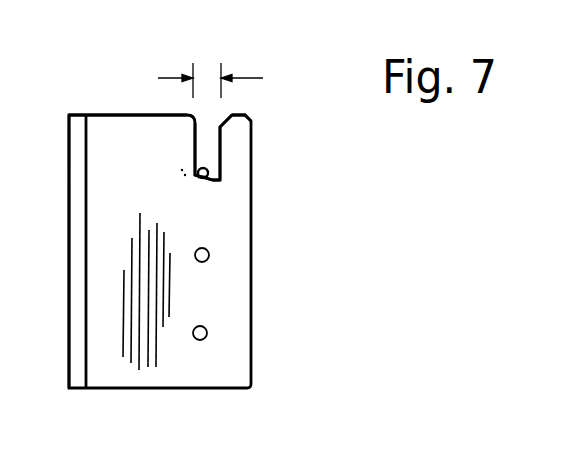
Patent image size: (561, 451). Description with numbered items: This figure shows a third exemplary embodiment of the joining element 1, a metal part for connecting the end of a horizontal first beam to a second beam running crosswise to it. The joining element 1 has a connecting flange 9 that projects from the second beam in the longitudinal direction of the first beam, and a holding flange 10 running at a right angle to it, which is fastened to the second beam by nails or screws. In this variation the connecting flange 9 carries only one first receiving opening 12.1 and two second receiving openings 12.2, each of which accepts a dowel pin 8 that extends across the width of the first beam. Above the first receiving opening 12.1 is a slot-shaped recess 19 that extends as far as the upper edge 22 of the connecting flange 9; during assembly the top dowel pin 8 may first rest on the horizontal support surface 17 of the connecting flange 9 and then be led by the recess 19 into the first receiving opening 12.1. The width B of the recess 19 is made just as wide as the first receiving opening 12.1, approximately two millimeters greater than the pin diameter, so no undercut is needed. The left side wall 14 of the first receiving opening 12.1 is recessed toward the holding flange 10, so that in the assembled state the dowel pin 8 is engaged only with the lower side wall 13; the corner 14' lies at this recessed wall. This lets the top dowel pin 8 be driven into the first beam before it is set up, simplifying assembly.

The joining element 1 is at (139, 107).
The dowel pin 8 is at (202, 184).
The connecting flange 9 is at (177, 373).
The holding flange 10 is at (77, 282).
The first receiving opening 12.1 is at (208, 163).
The second receiving opening 12.2 is at (209, 256).
The lower side wall 13 is at (215, 181).
The left side wall 14 is at (163, 195).
The notch corner 14' is at (154, 152).
The horizontal support surface 17 is at (243, 117).
The slot-shaped recess 19 is at (210, 143).
The upper edge 22 is at (105, 113).
The width of the recess B is at (210, 66).